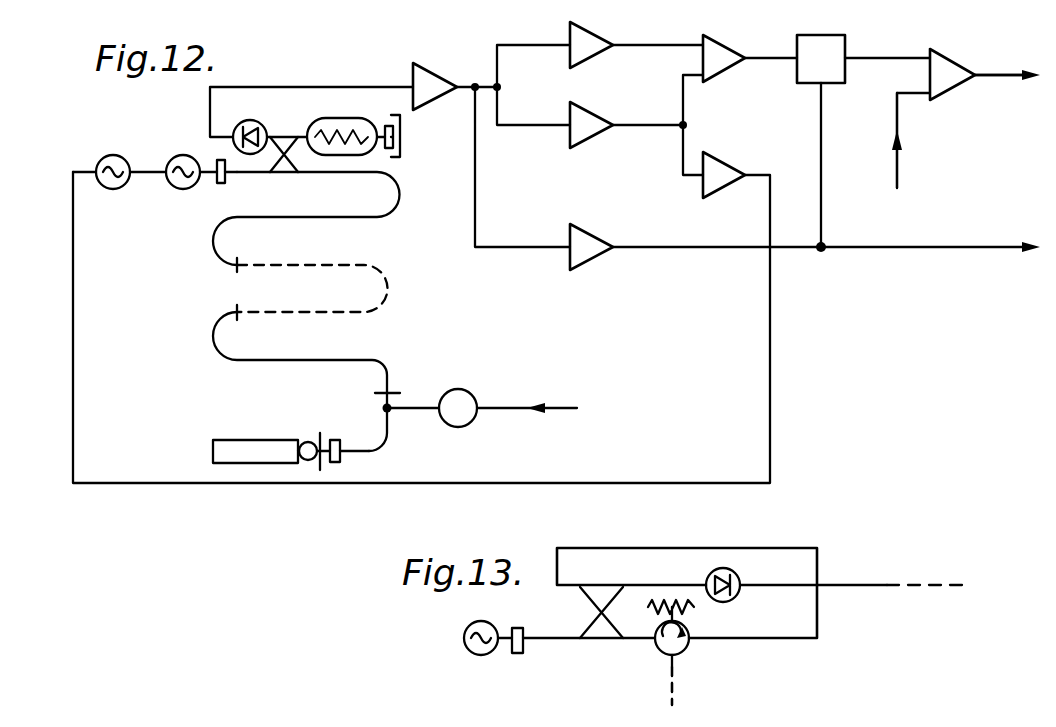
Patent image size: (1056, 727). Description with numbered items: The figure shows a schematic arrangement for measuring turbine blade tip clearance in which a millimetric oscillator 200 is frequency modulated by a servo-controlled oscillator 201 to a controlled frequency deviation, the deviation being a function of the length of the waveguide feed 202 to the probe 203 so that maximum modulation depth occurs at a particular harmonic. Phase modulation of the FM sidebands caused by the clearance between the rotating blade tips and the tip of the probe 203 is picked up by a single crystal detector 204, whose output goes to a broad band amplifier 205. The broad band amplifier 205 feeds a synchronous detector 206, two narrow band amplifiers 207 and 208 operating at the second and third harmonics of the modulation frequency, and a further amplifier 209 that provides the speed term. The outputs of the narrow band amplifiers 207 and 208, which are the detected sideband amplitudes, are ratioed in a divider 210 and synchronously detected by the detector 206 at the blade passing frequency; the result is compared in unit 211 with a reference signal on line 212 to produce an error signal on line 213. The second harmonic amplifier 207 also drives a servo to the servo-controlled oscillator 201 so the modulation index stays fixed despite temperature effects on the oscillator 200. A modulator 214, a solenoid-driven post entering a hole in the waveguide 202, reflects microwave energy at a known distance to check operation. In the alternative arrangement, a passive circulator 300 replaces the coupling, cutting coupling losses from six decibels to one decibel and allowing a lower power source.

In FIG. 12, the millimetric oscillator 200 is at (186, 190).
In FIG. 13, the millimetric oscillator 200 is at (467, 646).
In FIG. 12, the servo-controlled oscillator 201 is at (118, 190).
In FIG. 12, the waveguide feed 202 is at (318, 358).
In FIG. 13, the waveguide feed 202 is at (672, 667).
In FIG. 12, the probe 203 is at (265, 450).
In FIG. 12, the single crystal detector 204 is at (238, 124).
In FIG. 13, the single crystal detector 204 is at (740, 575).
In FIG. 12, the broad band amplifier 205 is at (450, 55).
In FIG. 12, the synchronous detector 206 is at (832, 70).
In FIG. 12, the narrow band amplifier 207 is at (585, 130).
In FIG. 12, the narrow band amplifier 208 is at (597, 47).
In FIG. 12, the further amplifier 209 is at (590, 242).
In FIG. 12, the divider 210 is at (730, 65).
In FIG. 12, the comparison unit 211 is at (950, 82).
In FIG. 12, the reference signal line 212 is at (900, 175).
In FIG. 12, the error signal line 213 is at (1008, 78).
In FIG. 12, the modulator 214 is at (472, 393).
In FIG. 13, the circulator 300 is at (658, 650).